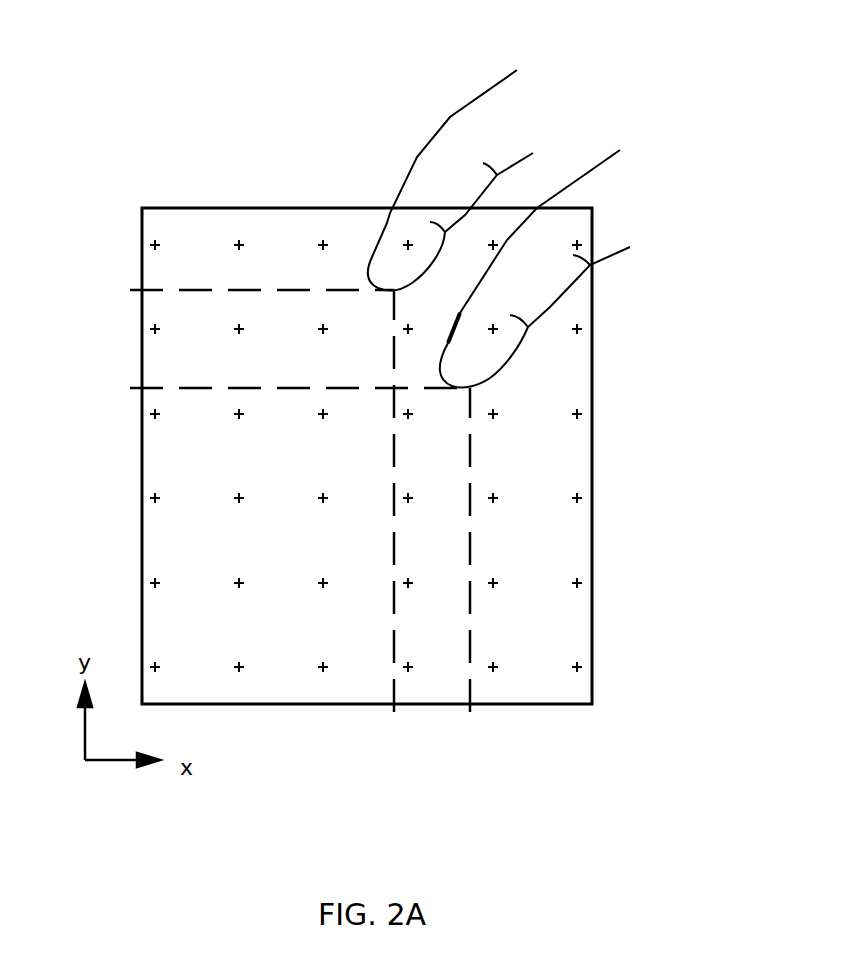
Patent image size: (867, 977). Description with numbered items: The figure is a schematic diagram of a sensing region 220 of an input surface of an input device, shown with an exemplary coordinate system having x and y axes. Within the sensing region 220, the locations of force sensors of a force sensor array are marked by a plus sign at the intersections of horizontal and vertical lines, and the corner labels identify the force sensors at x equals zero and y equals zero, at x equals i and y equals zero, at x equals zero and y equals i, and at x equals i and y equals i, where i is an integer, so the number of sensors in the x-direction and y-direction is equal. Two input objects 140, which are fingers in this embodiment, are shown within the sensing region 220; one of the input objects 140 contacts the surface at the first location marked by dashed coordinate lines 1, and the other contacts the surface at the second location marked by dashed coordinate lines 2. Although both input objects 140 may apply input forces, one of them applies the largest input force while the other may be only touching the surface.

The input objects 140 is at (540, 272).
The sensing region 220 is at (215, 208).
The first coordinate lines x1, y1 1 is at (255, 512).
The second coordinate lines x2, y2 2 is at (293, 561).